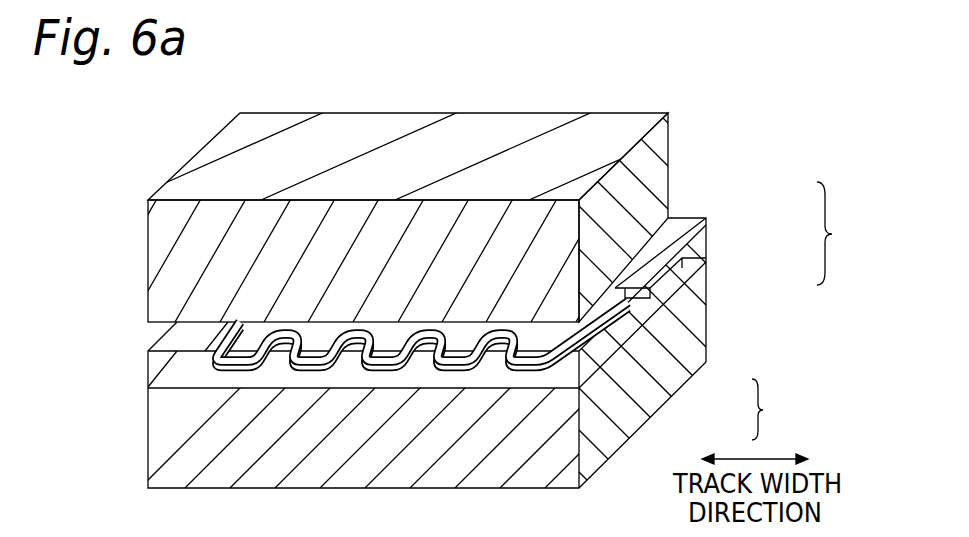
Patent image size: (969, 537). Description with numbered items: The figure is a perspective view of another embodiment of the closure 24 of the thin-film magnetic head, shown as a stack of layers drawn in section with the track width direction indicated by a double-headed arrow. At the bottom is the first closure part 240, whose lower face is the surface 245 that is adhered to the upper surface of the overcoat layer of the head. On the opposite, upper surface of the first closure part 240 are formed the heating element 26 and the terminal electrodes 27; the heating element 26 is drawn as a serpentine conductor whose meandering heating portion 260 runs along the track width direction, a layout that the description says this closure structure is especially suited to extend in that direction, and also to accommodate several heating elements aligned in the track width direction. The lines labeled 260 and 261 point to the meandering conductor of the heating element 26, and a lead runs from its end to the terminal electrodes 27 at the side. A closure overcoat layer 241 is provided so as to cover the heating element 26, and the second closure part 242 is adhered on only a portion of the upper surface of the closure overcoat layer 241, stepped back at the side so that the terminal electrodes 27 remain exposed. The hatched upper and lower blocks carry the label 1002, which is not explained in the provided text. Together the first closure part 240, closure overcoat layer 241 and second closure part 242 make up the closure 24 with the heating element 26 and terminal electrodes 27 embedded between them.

The closure 24 is at (843, 233).
The first closure part 240 is at (690, 311).
The closure overcoat layer 241 is at (695, 243).
The second closure part 242 is at (662, 180).
The surface to be adhered to the upper surface of the overcoat layer 245 is at (346, 455).
The heating element 26 is at (776, 409).
The heating portion 260 is at (575, 363).
The coil conductor upper layer 261 is at (582, 342).
The terminal electrodes 27 is at (655, 292).
The insulating layer 1002 is at (172, 255).